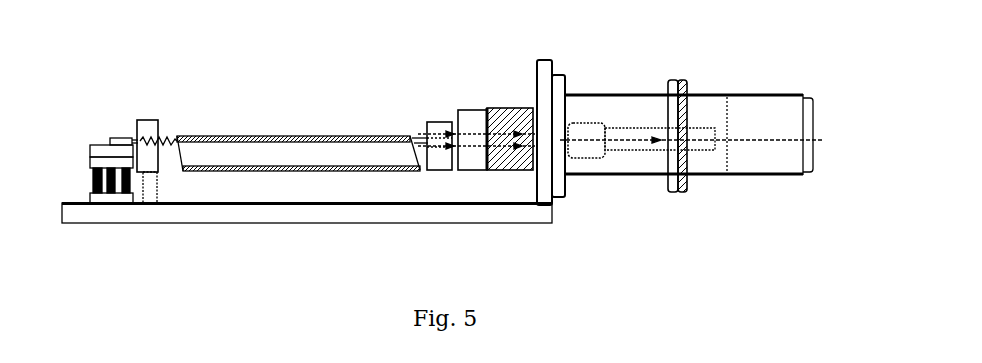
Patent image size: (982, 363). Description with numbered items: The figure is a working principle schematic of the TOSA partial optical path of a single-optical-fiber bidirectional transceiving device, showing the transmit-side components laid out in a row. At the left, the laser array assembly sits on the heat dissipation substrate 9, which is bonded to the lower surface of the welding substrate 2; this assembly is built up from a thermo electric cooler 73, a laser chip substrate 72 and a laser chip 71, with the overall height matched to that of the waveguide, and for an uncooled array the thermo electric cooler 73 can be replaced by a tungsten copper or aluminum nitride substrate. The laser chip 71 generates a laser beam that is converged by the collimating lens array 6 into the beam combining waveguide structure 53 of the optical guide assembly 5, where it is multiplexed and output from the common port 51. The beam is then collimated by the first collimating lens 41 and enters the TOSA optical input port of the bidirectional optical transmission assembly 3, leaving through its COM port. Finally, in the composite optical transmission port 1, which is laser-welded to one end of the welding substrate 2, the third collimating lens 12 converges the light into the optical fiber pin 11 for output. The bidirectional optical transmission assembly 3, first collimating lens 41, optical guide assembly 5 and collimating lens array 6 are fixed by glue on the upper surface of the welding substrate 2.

The composite optical transmission port 1 is at (647, 103).
The welding substrate 2 is at (538, 187).
The bidirectional optical transmission assembly 3 is at (517, 162).
The first collimating lens 41 is at (440, 170).
The optical guide assembly 5 is at (357, 158).
The common port 51 is at (413, 135).
The beam combining waveguide structure 53 is at (178, 136).
The collimating lens array 6 is at (155, 175).
The laser chip 71 is at (118, 138).
The laser chip substrate 72 is at (103, 150).
The thermo electric cooler 73 is at (110, 202).
The heat dissipation substrate 9 is at (258, 215).
The optical fiber pin 11 is at (697, 133).
The third collimating lens 12 is at (592, 157).